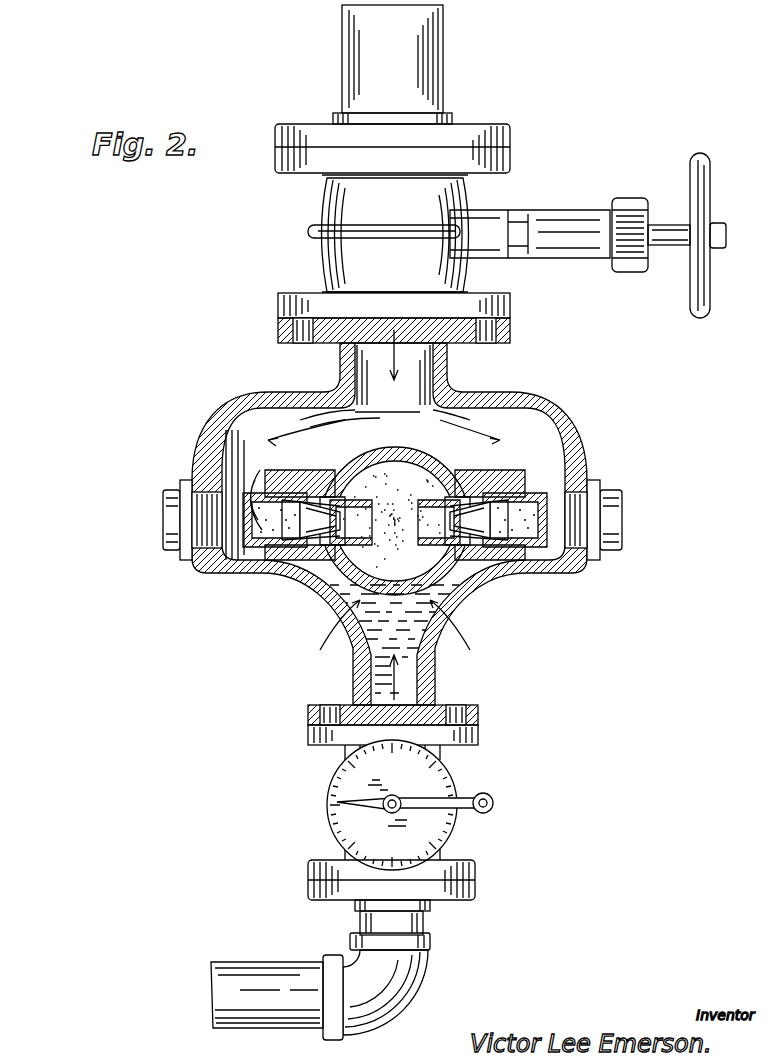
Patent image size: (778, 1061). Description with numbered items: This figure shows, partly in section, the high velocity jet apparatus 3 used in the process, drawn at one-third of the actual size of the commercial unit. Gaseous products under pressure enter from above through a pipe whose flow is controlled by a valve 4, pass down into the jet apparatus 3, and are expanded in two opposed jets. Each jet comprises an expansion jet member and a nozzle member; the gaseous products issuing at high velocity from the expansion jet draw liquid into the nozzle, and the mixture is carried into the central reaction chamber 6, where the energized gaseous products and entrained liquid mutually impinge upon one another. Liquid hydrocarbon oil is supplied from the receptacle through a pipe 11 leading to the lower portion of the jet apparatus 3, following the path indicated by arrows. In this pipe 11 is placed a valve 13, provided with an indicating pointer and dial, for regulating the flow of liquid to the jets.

The jet apparatus 3 is at (268, 392).
The valve 4 is at (549, 210).
The reaction chamber 6 is at (395, 521).
The pipe 11 is at (268, 982).
The valve 13 is at (372, 800).